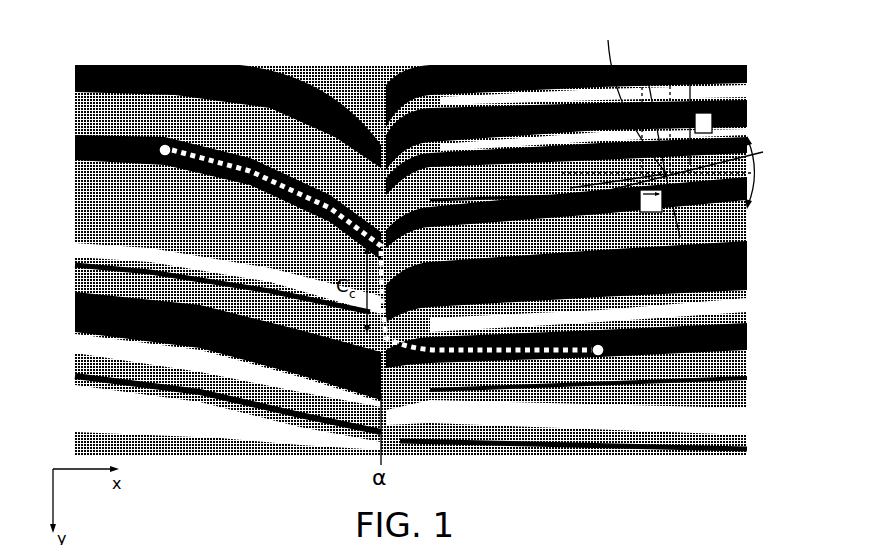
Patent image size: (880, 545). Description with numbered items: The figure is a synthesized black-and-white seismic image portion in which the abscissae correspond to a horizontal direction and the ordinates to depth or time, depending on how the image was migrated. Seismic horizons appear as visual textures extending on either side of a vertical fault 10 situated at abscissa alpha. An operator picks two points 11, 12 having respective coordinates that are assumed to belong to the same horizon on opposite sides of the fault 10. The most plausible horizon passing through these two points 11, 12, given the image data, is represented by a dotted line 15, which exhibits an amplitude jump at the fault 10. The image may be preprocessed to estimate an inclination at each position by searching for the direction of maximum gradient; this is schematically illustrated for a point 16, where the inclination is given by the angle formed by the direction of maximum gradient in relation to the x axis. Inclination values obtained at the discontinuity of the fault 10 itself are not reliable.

The fault 10 is at (388, 60).
The first point 11 is at (163, 146).
The second point 12 is at (599, 356).
The dotted line 15 is at (238, 172).
The point 16 is at (670, 180).